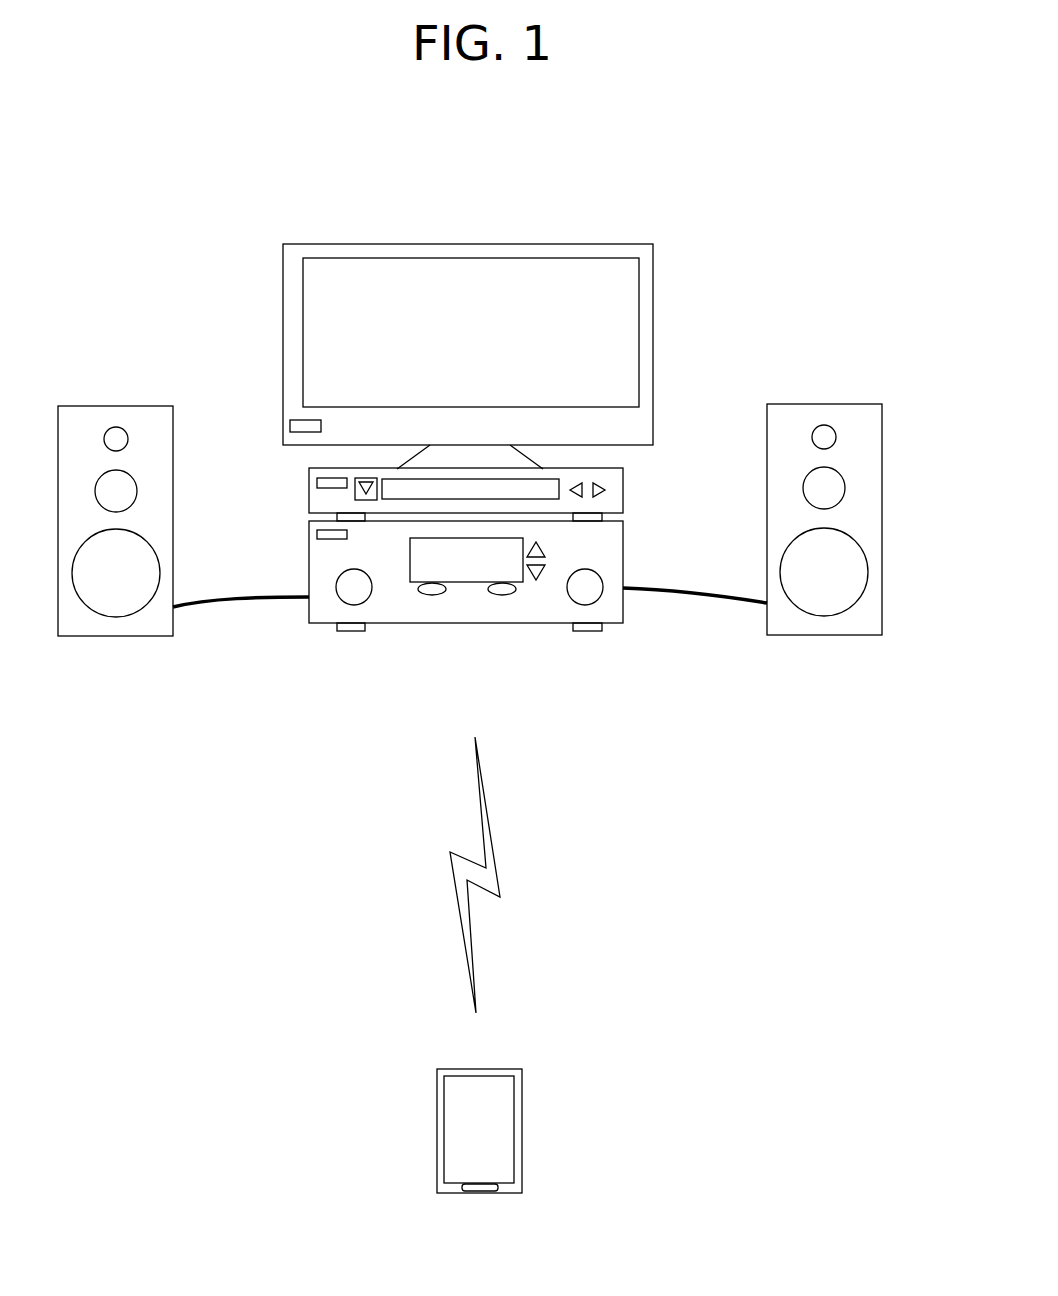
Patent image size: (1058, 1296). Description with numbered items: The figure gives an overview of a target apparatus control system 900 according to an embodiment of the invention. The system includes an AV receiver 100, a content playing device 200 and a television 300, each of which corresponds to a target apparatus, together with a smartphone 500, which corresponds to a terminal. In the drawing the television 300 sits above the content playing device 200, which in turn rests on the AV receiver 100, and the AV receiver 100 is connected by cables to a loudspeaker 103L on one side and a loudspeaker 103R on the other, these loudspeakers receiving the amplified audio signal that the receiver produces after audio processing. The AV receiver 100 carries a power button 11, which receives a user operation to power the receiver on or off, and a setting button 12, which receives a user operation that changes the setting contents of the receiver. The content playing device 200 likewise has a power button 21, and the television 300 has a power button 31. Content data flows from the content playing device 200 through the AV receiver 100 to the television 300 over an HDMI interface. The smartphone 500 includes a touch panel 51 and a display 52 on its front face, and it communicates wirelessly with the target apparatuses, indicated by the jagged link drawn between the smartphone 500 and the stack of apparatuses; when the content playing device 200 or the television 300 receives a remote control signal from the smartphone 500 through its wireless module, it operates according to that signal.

The target apparatus control system 900 is at (851, 189).
The television 300 is at (474, 356).
The power button 31 is at (290, 426).
The content playing device 200 is at (474, 480).
The power button 21 is at (317, 483).
The AV receiver 100 is at (500, 624).
The power button 11 is at (332, 540).
The setting button 12 is at (432, 595).
The loudspeaker 103L is at (147, 406).
The loudspeaker 103R is at (867, 403).
The smartphone 500 is at (528, 1100).
The touch panel 51 is at (532, 1122).
The display 52 is at (503, 1123).